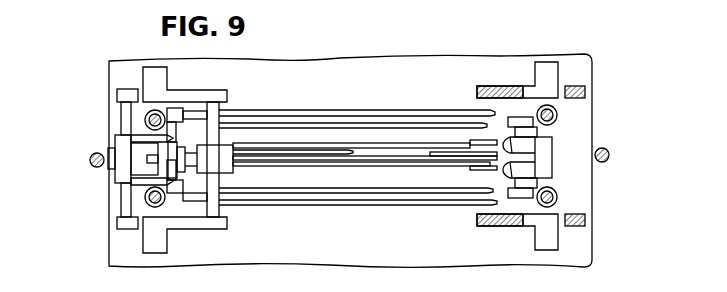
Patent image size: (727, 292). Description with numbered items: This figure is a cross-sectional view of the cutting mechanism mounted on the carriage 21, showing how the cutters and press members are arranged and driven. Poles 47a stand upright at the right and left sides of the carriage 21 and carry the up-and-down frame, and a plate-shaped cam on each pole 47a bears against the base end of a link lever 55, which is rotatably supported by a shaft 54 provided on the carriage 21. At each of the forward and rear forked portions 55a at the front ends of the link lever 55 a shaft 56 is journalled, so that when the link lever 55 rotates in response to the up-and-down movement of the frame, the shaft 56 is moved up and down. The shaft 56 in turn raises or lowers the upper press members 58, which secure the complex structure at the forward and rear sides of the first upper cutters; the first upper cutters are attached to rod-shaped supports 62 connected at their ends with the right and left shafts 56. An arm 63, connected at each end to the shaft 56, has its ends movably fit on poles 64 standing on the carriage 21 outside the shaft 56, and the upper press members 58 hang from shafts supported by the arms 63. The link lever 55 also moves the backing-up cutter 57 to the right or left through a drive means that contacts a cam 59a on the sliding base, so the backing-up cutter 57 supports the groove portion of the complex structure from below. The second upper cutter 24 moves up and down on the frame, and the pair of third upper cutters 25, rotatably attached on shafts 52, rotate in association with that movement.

The carriage 21 is at (298, 74).
The second upper cutter 24 is at (322, 160).
The third upper cutters 25 is at (434, 162).
The poles 47a is at (91, 165).
The shafts 52 is at (219, 210).
The shaft 54 is at (125, 106).
The link lever 55 is at (116, 138).
The forked portions 55a is at (143, 135).
The shaft 56 is at (190, 117).
The backing-up cutter 57 is at (505, 137).
The upper press members 58 is at (416, 108).
The cam 59a is at (552, 166).
The supports 62 is at (364, 150).
The arm 63 is at (288, 206).
The poles 64 is at (150, 206).